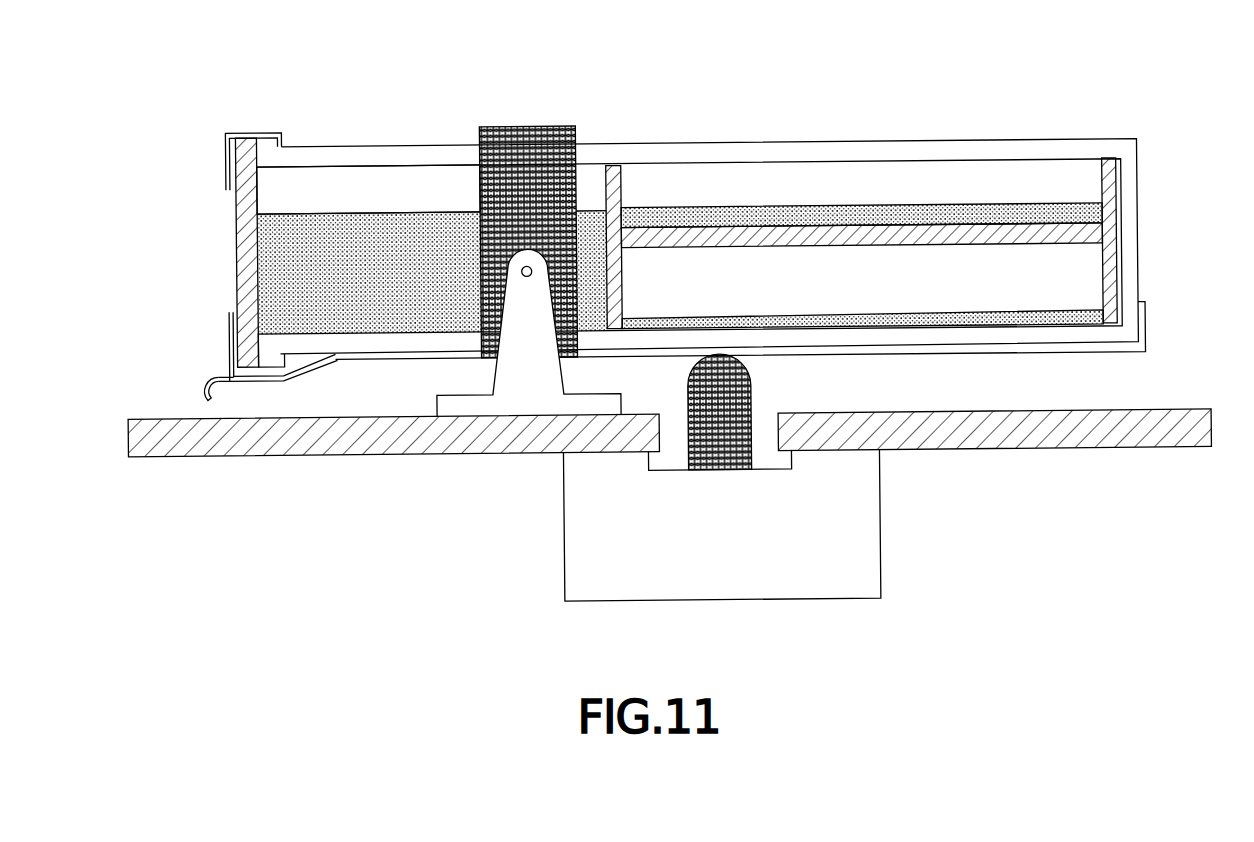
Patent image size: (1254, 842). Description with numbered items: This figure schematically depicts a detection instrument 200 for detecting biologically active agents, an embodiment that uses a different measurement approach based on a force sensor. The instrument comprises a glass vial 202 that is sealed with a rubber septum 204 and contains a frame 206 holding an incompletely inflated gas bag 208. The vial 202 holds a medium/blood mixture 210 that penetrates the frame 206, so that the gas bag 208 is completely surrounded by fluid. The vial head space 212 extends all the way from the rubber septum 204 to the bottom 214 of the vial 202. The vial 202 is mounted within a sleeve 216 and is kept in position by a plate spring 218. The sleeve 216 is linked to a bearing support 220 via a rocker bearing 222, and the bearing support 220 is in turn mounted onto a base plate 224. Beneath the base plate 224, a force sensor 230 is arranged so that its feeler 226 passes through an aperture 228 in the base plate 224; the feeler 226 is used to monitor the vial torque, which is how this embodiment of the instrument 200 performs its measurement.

The detection instrument 200 is at (263, 113).
The glass vial 202 is at (812, 132).
The rubber septum 204 is at (238, 226).
The frame 206 is at (617, 163).
The gas bag 208 is at (682, 258).
The medium/blood mixture 210 is at (375, 315).
The vial head space 212 is at (333, 181).
The bottom 214 is at (1115, 184).
The sleeve 216 is at (520, 123).
The plate spring 218 is at (285, 381).
The bearing support 220 is at (510, 398).
The rocker bearing 222 is at (521, 270).
The base plate 224 is at (970, 438).
The feeler 226 is at (748, 373).
The aperture 228 is at (672, 437).
The force sensor 230 is at (872, 547).